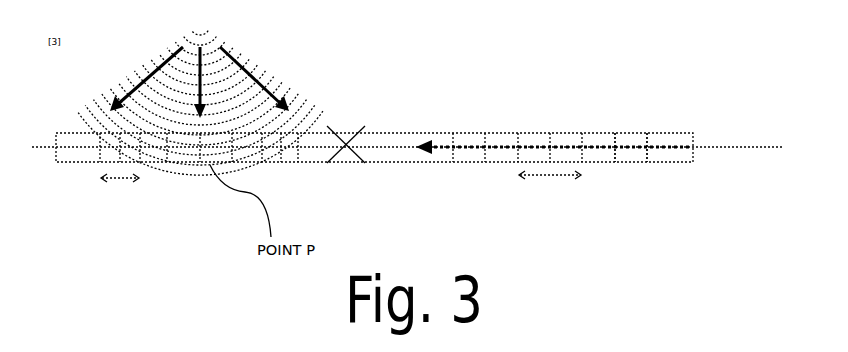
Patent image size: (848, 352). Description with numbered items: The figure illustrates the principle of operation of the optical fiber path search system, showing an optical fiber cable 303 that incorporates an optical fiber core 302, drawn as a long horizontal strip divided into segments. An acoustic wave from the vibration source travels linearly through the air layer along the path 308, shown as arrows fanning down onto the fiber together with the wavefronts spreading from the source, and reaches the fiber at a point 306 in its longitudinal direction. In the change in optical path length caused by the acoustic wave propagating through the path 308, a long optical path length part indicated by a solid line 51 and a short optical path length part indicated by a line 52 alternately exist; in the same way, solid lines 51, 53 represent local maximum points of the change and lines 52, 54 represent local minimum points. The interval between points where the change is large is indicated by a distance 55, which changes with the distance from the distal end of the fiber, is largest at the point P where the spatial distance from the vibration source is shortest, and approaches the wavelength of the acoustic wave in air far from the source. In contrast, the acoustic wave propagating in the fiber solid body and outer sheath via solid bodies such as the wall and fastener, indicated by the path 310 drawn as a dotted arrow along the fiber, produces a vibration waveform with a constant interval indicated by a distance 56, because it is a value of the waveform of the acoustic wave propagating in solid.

The optical fiber core 302 is at (733, 147).
The optical fiber cable 303 is at (683, 133).
The path 308 is at (250, 62).
The point 306 is at (348, 165).
The path 310 is at (465, 150).
The solid line 51 is at (301, 165).
The line 52 is at (283, 165).
The solid line 53 is at (649, 165).
The dashed line 54 is at (617, 165).
The distance 55 is at (122, 183).
The distance 56 is at (545, 180).